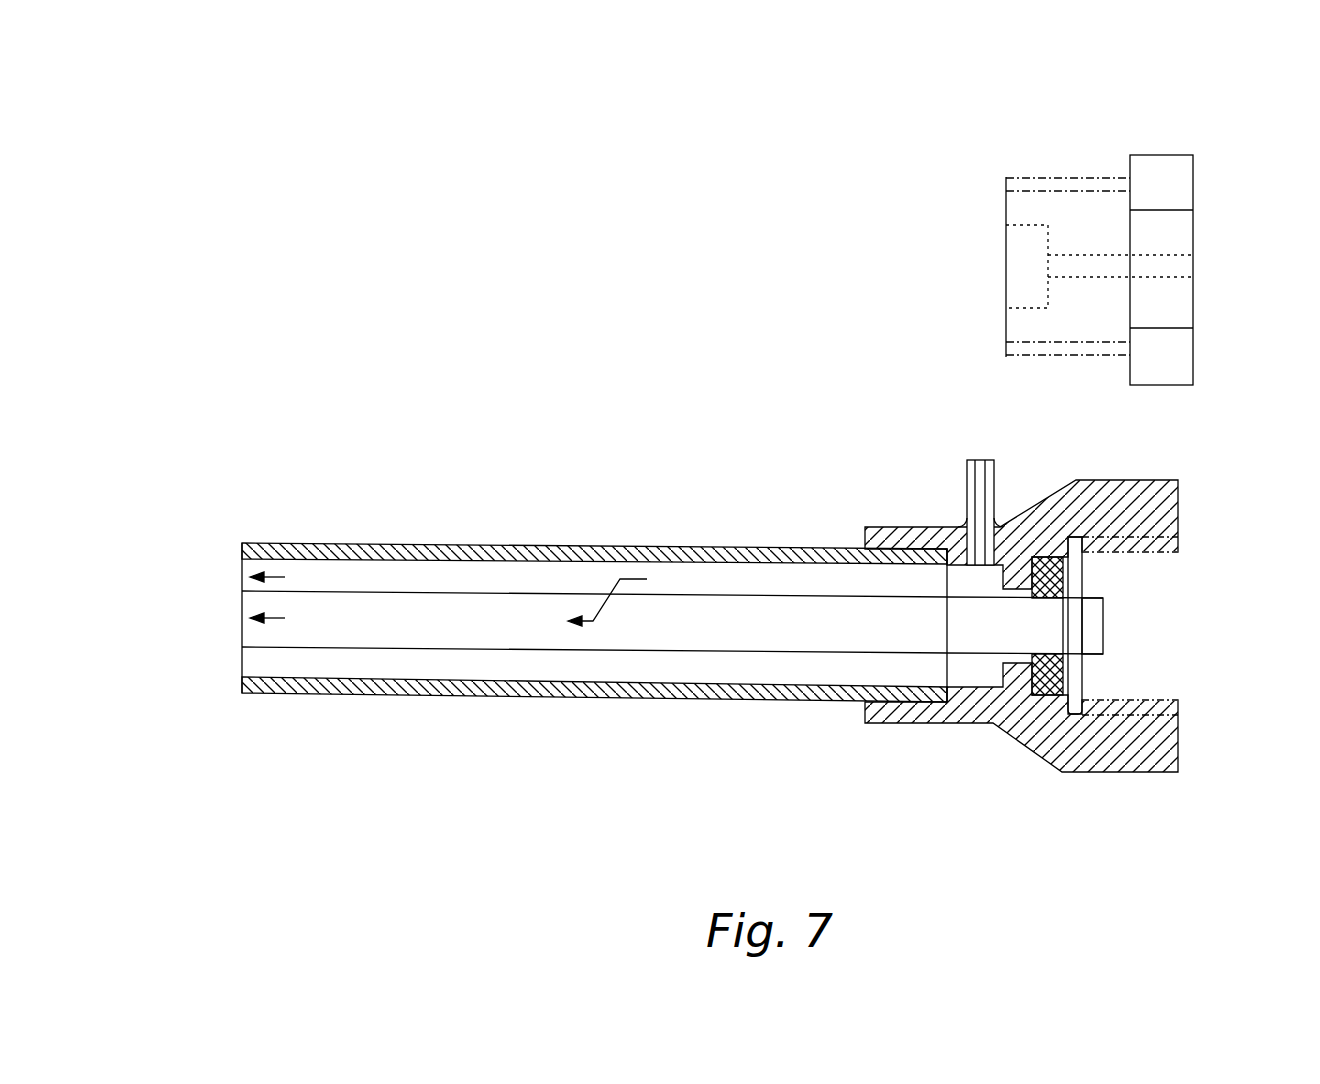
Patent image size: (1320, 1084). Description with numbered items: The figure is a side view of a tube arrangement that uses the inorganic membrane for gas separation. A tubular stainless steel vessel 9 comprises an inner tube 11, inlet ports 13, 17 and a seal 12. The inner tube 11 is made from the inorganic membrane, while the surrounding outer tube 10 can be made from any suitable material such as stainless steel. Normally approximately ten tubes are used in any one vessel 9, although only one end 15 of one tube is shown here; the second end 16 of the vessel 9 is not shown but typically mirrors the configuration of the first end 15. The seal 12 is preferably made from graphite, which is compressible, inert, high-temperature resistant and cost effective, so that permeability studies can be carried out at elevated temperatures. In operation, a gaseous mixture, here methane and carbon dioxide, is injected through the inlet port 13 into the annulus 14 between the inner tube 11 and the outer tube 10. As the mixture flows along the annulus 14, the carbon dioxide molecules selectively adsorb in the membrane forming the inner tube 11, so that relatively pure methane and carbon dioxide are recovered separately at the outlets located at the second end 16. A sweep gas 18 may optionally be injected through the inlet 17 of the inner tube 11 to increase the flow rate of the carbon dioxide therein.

The tubular stainless steel vessel 9 is at (458, 381).
The outer tube 10 is at (322, 545).
The inner tube 11 is at (440, 592).
The seal 12 is at (1045, 567).
The inlet port 13 is at (962, 460).
The annulus 14 is at (728, 578).
The first end 15 is at (1199, 575).
The second end 16 is at (217, 516).
The inlet 17 is at (1103, 650).
The sweep gas 18 is at (1130, 622).